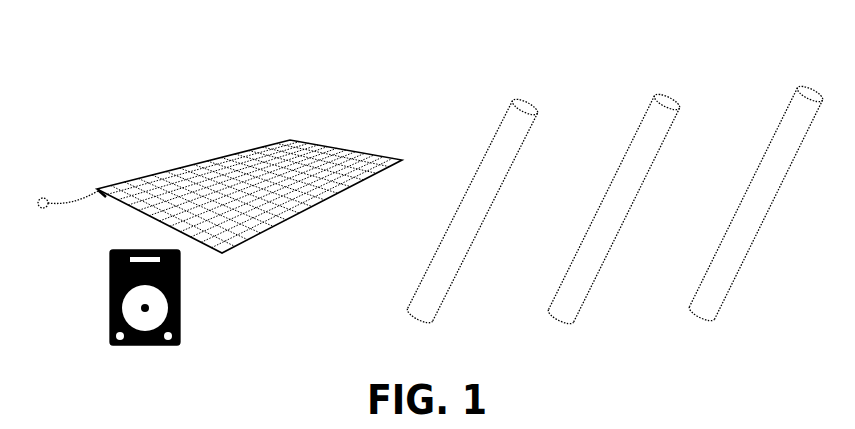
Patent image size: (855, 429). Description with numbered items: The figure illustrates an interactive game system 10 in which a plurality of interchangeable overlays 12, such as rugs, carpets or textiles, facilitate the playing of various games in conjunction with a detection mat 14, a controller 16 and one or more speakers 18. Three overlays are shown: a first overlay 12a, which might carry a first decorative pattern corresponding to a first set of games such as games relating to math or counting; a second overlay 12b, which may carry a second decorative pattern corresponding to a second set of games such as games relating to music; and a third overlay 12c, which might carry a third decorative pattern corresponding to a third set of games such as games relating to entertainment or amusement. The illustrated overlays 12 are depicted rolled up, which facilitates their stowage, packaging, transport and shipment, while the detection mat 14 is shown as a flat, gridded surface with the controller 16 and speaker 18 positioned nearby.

The interactive game system 10 is at (433, 43).
The interchangeable overlays 12 is at (770, 281).
The first overlay 12a is at (480, 167).
The second overlay 12b is at (637, 133).
The third overlay 12c is at (773, 132).
The detection mat 14 is at (245, 148).
The controller 16 is at (105, 198).
The speakers 18 is at (110, 299).